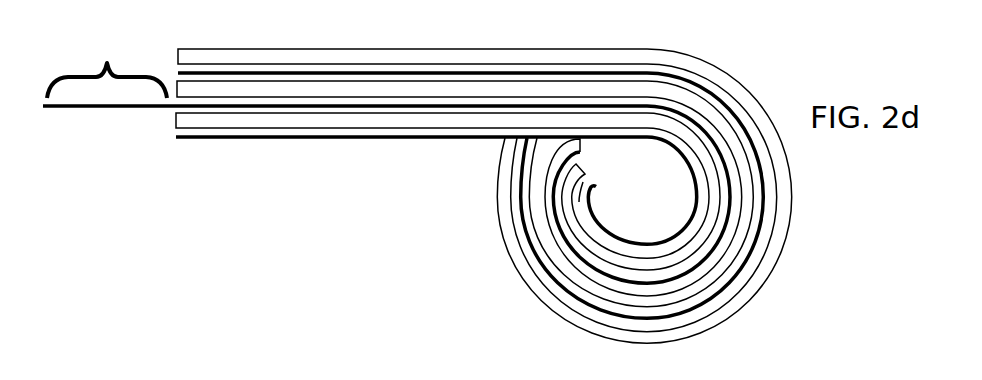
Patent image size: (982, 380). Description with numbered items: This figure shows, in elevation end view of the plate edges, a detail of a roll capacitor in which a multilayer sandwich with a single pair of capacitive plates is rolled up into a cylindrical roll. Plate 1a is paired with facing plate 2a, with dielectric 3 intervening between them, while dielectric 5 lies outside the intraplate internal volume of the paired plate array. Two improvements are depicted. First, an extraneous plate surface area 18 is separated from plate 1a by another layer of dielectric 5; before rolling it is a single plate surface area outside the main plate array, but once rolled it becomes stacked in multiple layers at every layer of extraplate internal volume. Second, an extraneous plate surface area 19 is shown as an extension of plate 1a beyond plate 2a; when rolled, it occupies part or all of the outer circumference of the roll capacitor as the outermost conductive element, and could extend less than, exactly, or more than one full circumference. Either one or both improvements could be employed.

The dielectric 5 is at (257, 88).
The extraneous plate surface area 18 is at (317, 73).
The dielectric 3 is at (176, 122).
The plate 1a is at (253, 107).
The plate 2a is at (302, 138).
The extraneous plate surface area 19 is at (107, 69).